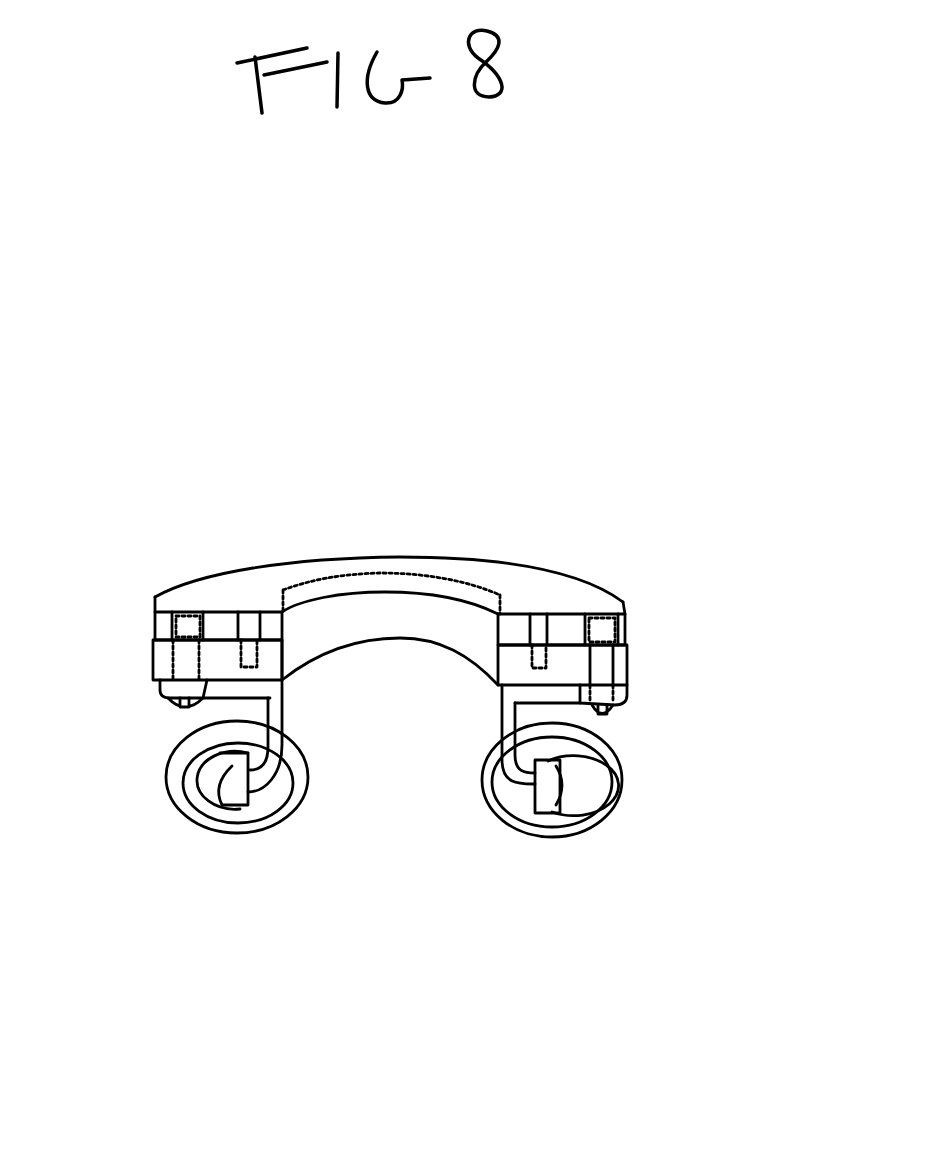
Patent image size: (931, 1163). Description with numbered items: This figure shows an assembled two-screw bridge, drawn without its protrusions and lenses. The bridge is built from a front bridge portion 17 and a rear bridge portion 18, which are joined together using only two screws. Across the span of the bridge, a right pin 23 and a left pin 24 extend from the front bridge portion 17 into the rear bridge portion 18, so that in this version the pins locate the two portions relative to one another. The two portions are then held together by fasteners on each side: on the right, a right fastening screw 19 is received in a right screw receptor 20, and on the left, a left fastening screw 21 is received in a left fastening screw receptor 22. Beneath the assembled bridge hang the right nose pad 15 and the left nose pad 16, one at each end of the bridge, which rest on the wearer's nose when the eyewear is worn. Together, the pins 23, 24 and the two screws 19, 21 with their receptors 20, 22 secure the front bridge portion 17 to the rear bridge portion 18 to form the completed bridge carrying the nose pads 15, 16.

The right nose pad 15 is at (590, 815).
The left nose pad 16 is at (222, 812).
The front bridge portion 17 is at (510, 583).
The rear bridge portion 18 is at (377, 618).
The right fastening screw 19 is at (613, 716).
The right screw receptor 20 is at (595, 633).
The left fastening screw 21 is at (178, 710).
The left fastening screw receptor 22 is at (187, 632).
The right pin 23 is at (540, 632).
The left pin 24 is at (250, 622).